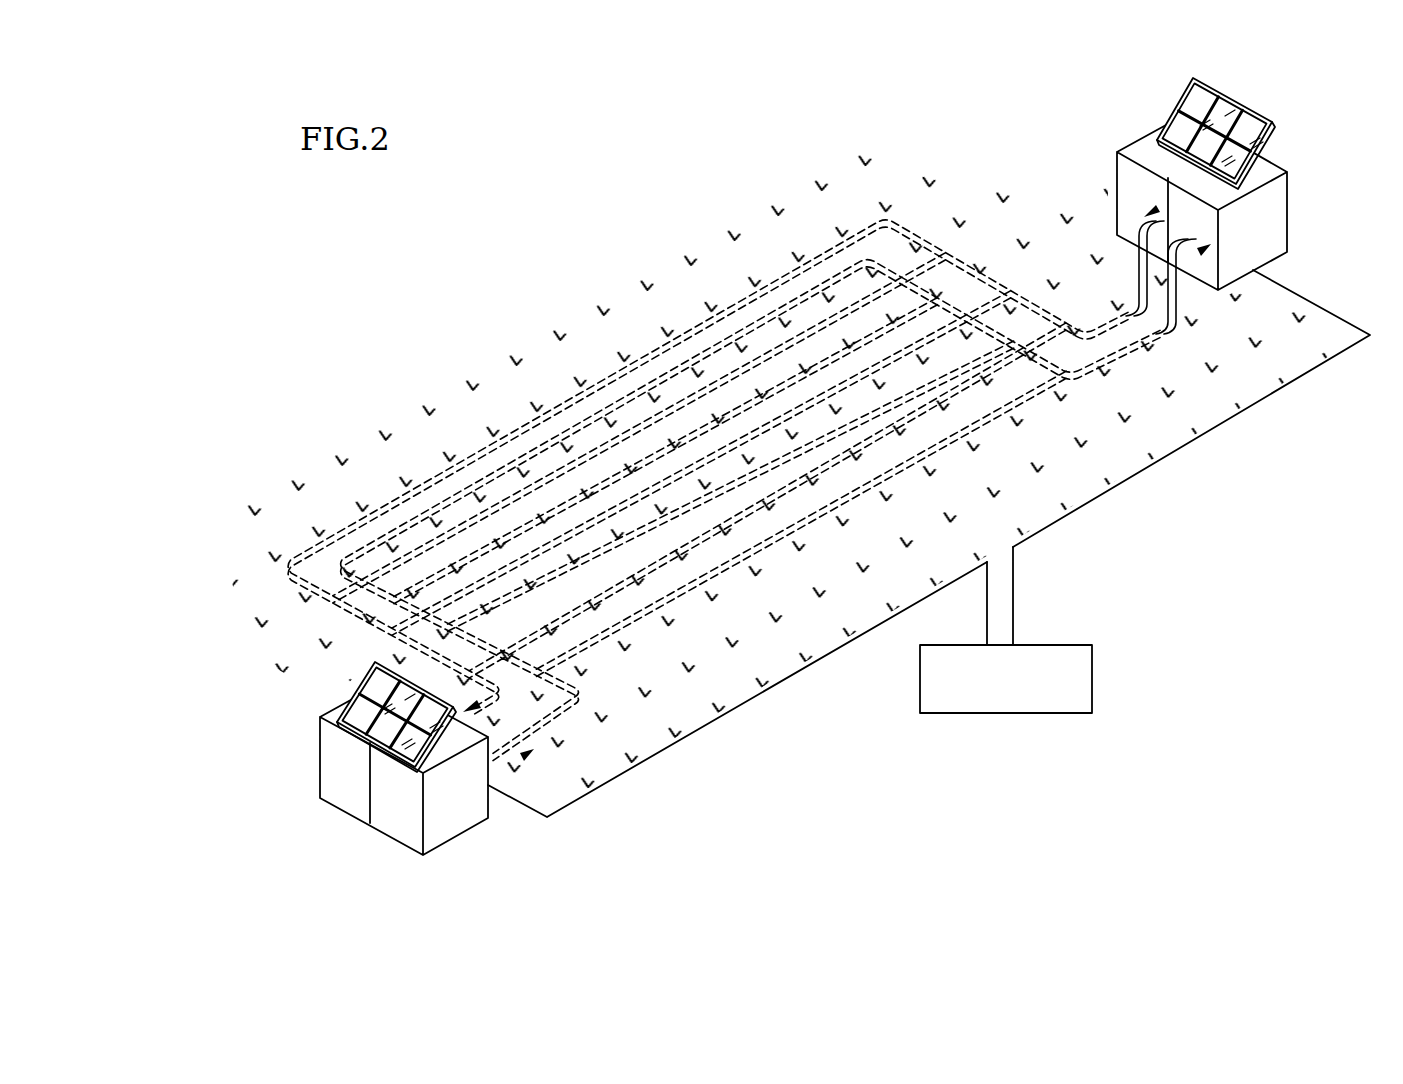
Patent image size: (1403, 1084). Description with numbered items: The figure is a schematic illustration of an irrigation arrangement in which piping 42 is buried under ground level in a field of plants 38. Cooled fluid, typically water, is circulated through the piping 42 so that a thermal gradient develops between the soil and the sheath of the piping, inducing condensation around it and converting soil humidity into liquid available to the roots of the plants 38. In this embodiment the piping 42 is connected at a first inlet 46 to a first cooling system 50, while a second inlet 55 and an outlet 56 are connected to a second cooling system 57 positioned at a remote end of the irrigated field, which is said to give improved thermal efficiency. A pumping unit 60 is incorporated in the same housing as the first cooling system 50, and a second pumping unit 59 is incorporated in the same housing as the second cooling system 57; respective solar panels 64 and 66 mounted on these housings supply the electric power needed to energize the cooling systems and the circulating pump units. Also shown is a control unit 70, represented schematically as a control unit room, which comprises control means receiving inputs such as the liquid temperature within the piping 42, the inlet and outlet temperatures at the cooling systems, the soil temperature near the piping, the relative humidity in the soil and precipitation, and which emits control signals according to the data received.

The plants 38 is at (788, 745).
The piping 42 is at (685, 335).
The first inlet 46 is at (1192, 258).
The first cooling system 50 is at (1207, 174).
The second inlet 55 is at (537, 743).
The outlet 56 is at (478, 697).
The second cooling system 57 is at (380, 766).
The second pumping unit 59 is at (393, 842).
The pumping unit 60 is at (1141, 147).
The solar panel 64 is at (1195, 100).
The solar panel 66 is at (370, 688).
The control unit 70 is at (1055, 640).